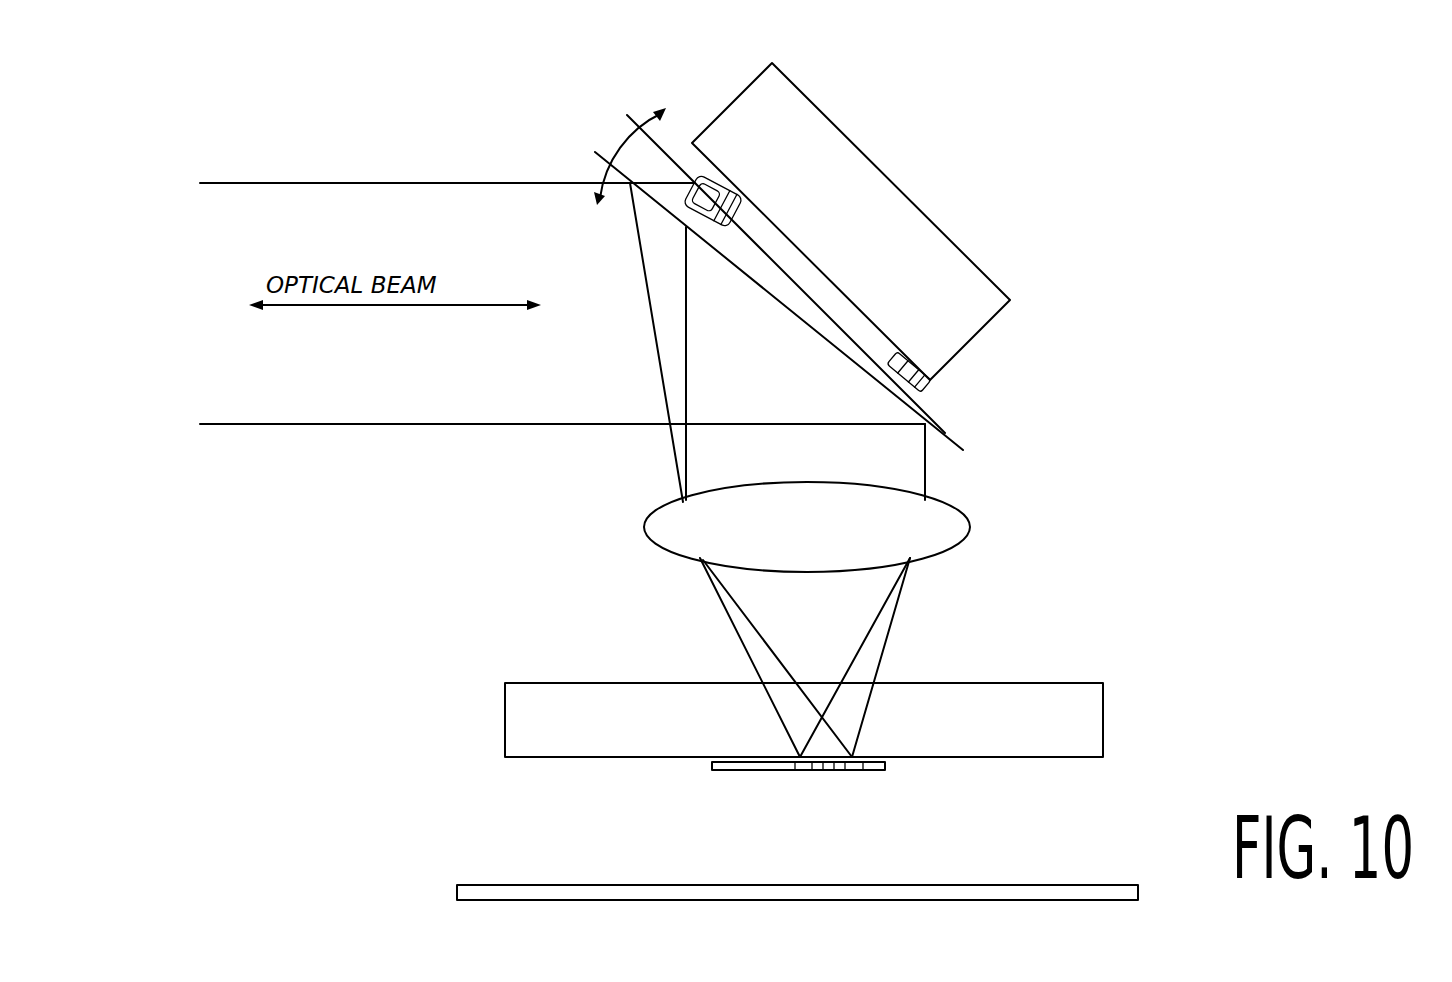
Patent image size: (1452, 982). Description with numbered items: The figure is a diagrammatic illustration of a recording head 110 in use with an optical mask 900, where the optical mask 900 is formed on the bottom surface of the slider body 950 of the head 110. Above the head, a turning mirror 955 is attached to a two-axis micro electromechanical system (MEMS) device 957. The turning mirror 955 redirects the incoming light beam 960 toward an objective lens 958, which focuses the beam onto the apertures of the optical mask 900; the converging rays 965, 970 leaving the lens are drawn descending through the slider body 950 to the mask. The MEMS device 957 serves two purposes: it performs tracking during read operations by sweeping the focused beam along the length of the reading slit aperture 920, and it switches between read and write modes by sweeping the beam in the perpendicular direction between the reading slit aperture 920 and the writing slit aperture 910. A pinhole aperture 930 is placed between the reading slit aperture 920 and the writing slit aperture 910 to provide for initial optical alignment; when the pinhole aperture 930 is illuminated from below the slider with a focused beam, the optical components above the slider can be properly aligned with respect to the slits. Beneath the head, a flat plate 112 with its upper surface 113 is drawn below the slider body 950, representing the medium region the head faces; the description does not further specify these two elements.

The 2-axis micro electromechanical system (MEMS) device 957 is at (893, 174).
The turning mirror 955 is at (797, 318).
The light beam 960 is at (337, 403).
The objective lens 958 is at (653, 537).
The focused beam 965 is at (879, 607).
The focused beam 970 is at (881, 647).
The slider body 950 is at (1045, 698).
The head 110 is at (759, 690).
The optical mask 900 is at (814, 802).
The writing slit aperture 910 is at (798, 772).
The reading slit aperture 920 is at (852, 772).
The pinhole aperture 930 is at (822, 772).
The top surface of base plate 113 is at (771, 878).
The base plate 112 is at (500, 893).